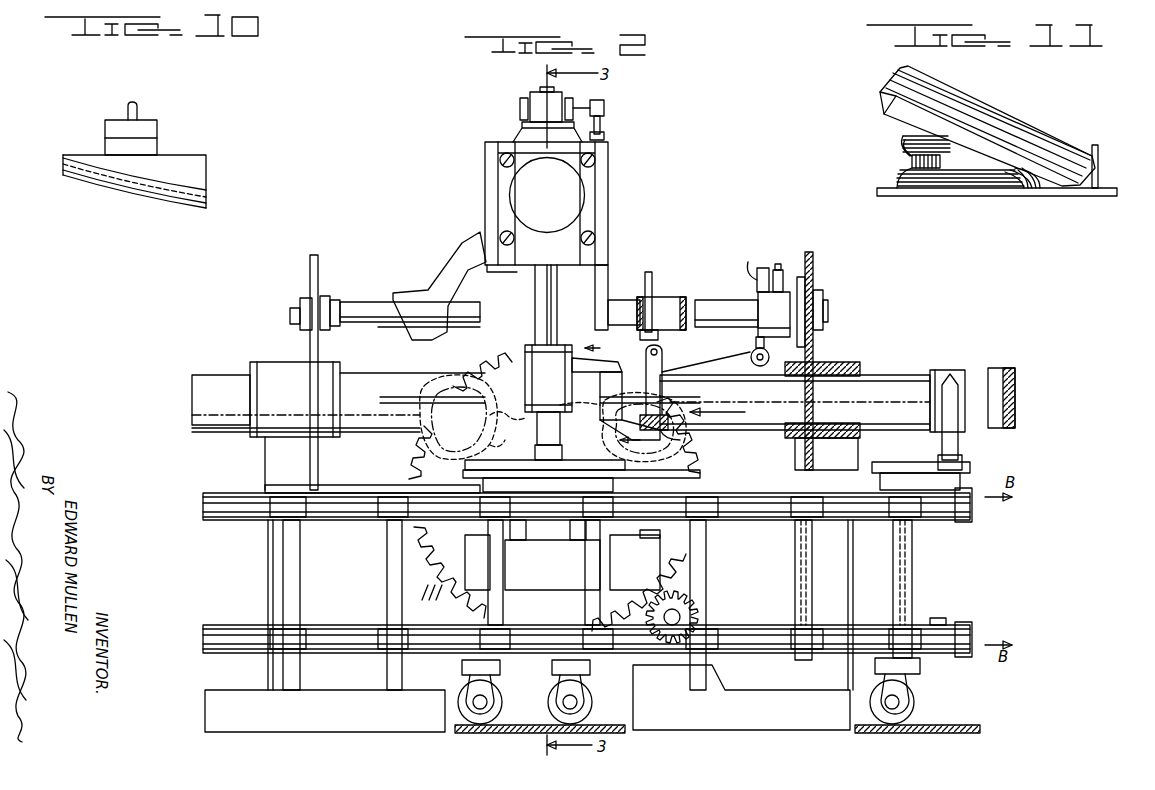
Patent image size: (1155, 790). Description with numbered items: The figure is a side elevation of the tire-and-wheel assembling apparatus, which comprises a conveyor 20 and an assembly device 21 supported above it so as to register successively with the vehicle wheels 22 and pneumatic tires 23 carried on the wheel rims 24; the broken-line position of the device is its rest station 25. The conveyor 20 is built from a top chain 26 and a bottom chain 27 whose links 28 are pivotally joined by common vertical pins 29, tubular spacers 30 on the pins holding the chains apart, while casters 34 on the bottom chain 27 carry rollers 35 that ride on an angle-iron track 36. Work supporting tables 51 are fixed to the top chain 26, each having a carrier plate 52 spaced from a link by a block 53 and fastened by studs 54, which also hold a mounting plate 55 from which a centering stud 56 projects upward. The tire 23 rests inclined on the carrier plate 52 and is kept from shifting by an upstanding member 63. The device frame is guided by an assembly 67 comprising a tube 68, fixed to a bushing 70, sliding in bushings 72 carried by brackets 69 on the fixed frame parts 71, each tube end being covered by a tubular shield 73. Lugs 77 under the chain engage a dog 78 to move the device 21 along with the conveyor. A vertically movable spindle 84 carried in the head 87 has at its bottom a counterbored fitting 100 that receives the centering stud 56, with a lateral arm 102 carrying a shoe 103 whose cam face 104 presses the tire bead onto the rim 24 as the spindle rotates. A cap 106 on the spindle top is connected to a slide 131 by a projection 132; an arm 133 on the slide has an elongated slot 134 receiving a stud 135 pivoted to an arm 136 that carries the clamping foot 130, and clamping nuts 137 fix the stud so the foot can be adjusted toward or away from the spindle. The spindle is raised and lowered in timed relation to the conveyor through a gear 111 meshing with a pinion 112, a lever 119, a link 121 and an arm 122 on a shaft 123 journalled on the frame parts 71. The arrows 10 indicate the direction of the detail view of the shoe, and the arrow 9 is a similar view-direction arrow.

In FIG. 2, the direction arrow 9 is at (720, 418).
In FIG. 2, the arrows 10 is at (635, 394).
In FIG. 2, the conveyor 20 is at (960, 522).
In FIG. 2, the assembly device 21 is at (618, 178).
In FIG. 11, the vehicle wheel 22 is at (1015, 178).
In FIG. 2, the vehicle wheel 22 is at (530, 422).
In FIG. 11, the pneumatic tire 23 is at (1043, 130).
In FIG. 2, the pneumatic tire 23 is at (420, 402).
In FIG. 11, the wheel rim 24 is at (912, 160).
In FIG. 2, the wheel rim 24 is at (458, 419).
In FIG. 2, the rest station 25 is at (740, 478).
In FIG. 2, the top chain 26 is at (880, 525).
In FIG. 2, the bottom chain 27 is at (946, 618).
In FIG. 2, the links 28 is at (838, 492).
In FIG. 2, the vertical pin 29 is at (795, 548).
In FIG. 2, the tubular spacers 30 is at (812, 615).
In FIG. 2, the casters 34 is at (595, 683).
In FIG. 2, the rollers 35 is at (592, 708).
In FIG. 2, the track 36 is at (900, 733).
In FIG. 11, the work supporting table 51 is at (1108, 196).
In FIG. 2, the work supporting table 51 is at (710, 478).
In FIG. 2, the carrier plate 52 is at (700, 462).
In FIG. 2, the block 53 is at (485, 480).
In FIG. 2, the studs 54 is at (545, 475).
In FIG. 2, the mounting plate 55 is at (598, 460).
In FIG. 2, the centering stud 56 is at (540, 403).
In FIG. 11, the member 63 is at (1099, 172).
In FIG. 2, the member 63 is at (690, 432).
In FIG. 2, the assembly 67 is at (795, 365).
In FIG. 2, the tube 68 is at (935, 372).
In FIG. 2, the brackets 69 is at (272, 375).
In FIG. 2, the bushing 70 is at (462, 372).
In FIG. 2, the parts of fixed frame 71 is at (318, 268).
In FIG. 2, the bushings 72 is at (858, 362).
In FIG. 2, the tubular shield 73 is at (1015, 395).
In FIG. 2, the lugs 77 is at (552, 530).
In FIG. 2, the dog 78 is at (628, 535).
In FIG. 2, the spindle 84 is at (556, 300).
In FIG. 2, the head 87 is at (600, 222).
In FIG. 2, the counterbored fitting 100 is at (525, 360).
In FIG. 10, the arm 102 is at (147, 118).
In FIG. 2, the arm 102 is at (585, 356).
In FIG. 10, the shoe 103 is at (182, 162).
In FIG. 2, the shoe 103 is at (600, 395).
In FIG. 10, the cam face 104 is at (175, 202).
In FIG. 2, the cap 106 is at (530, 110).
In FIG. 2, the gear 111 is at (432, 600).
In FIG. 2, the pinion 112 is at (680, 608).
In FIG. 2, the lever 119 is at (728, 353).
In FIG. 2, the link 121 is at (760, 268).
In FIG. 2, the arm 122 is at (780, 266).
In FIG. 2, the shaft 123 is at (365, 300).
In FIG. 2, the clamping foot 130 is at (668, 420).
In FIG. 2, the slide 131 is at (608, 290).
In FIG. 2, the projection 132 is at (605, 108).
In FIG. 2, the arm 133 is at (622, 300).
In FIG. 2, the elongated slot 134 is at (675, 297).
In FIG. 2, the stud 135 is at (652, 278).
In FIG. 2, the arm 136 is at (662, 380).
In FIG. 2, the clamping nuts 137 is at (660, 297).